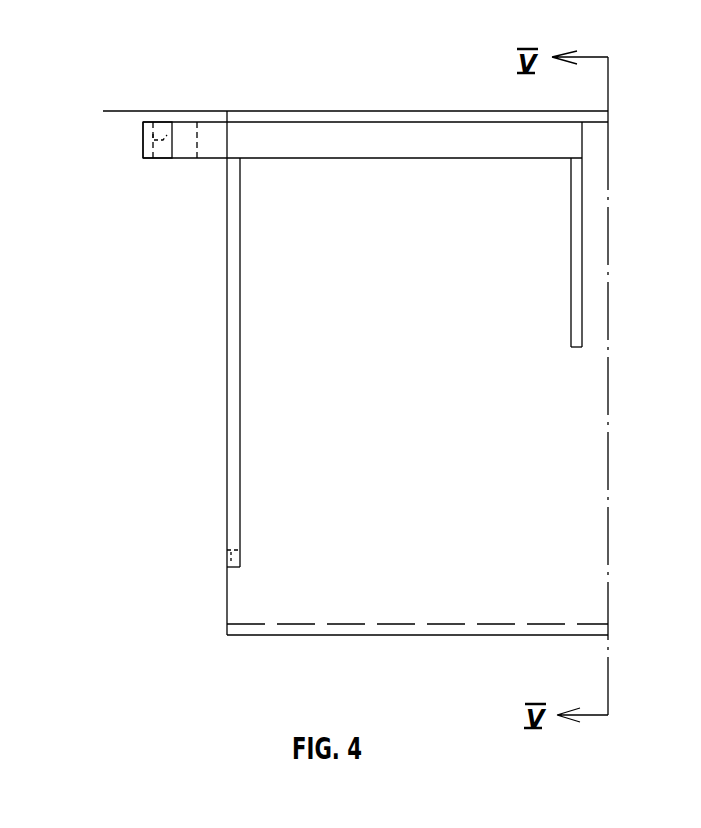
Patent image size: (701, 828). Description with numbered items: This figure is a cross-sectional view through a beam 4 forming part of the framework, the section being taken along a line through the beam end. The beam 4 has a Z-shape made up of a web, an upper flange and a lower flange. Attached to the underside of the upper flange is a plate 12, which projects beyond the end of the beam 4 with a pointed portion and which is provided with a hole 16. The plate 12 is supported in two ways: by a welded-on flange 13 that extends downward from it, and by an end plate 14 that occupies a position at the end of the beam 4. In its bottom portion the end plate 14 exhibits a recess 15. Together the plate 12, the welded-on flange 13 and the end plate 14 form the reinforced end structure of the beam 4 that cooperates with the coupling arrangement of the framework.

The beam 4 is at (255, 100).
The plate 12 is at (228, 140).
The welded-on flange 13 is at (575, 293).
The end plate 14 is at (233, 307).
The recess 15 is at (227, 565).
The hole 16 is at (167, 122).